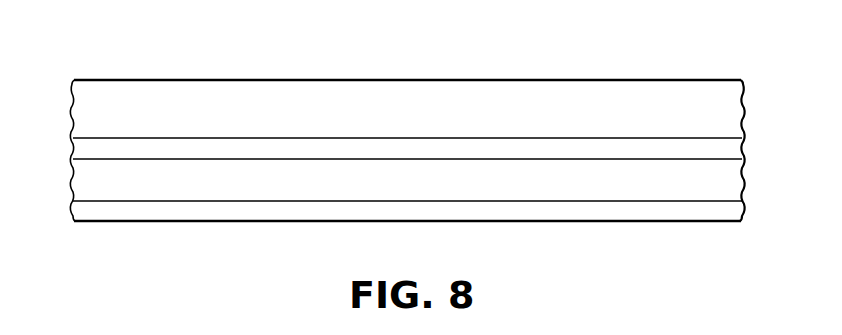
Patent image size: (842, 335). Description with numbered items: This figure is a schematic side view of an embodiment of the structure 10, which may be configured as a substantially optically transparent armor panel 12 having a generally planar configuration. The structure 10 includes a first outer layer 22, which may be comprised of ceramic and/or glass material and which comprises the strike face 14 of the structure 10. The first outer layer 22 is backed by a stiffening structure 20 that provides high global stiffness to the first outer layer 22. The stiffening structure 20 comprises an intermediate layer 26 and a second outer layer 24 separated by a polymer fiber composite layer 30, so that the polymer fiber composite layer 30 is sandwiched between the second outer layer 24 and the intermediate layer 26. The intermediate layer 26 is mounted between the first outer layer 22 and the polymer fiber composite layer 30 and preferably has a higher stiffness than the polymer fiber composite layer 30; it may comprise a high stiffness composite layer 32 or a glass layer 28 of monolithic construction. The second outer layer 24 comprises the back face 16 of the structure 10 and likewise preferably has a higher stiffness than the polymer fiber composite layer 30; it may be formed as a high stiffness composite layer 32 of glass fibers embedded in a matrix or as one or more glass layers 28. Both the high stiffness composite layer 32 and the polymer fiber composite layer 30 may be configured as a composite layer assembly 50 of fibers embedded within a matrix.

The structure 10 is at (125, 80).
The armor panel 12 is at (424, 97).
The strike face 14 is at (564, 110).
The back face 16 is at (145, 222).
The stiffening structure 20 is at (755, 132).
The first outer layer 22 is at (675, 103).
The second outer layer 24 is at (627, 210).
The intermediate layer 26 is at (714, 148).
The glass layer 28 is at (92, 152).
The polymer fiber composite layer 30 is at (713, 182).
The high stiffness composite layer 32 is at (90, 146).
The composite layer assembly 50 is at (122, 145).